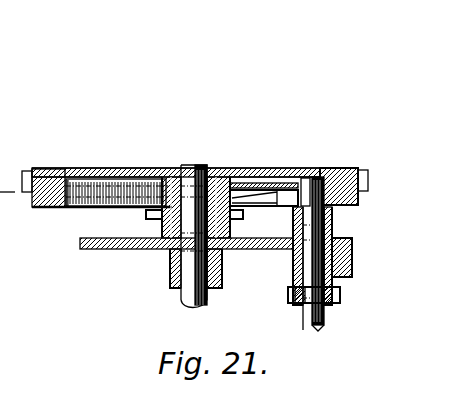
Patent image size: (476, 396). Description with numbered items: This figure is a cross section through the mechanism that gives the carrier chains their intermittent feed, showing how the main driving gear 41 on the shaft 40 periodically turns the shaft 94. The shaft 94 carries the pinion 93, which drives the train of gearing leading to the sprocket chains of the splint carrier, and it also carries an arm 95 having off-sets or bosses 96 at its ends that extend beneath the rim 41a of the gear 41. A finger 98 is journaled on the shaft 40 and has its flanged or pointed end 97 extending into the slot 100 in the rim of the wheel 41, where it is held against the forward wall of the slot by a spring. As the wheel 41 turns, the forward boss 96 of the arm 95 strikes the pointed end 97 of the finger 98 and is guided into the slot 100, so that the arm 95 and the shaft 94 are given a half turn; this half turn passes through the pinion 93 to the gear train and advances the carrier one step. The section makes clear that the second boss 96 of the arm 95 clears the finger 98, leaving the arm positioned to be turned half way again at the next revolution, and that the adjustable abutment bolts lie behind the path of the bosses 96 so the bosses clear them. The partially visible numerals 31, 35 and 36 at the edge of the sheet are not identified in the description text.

The shaft 40 is at (192, 176).
The main driving gear 41 is at (25, 170).
The rim 41a is at (53, 208).
The pinion 93 is at (288, 292).
The shaft 94 is at (303, 262).
The arm 95 is at (333, 223).
The off-sets or bosses 96 is at (314, 172).
The flanged or pointed end 97 is at (300, 178).
The finger 98 is at (284, 185).
The member 31 is at (11, 206).
The member 35 is at (12, 80).
The member 36 is at (11, 233).
The slot 100 is at (13, 260).